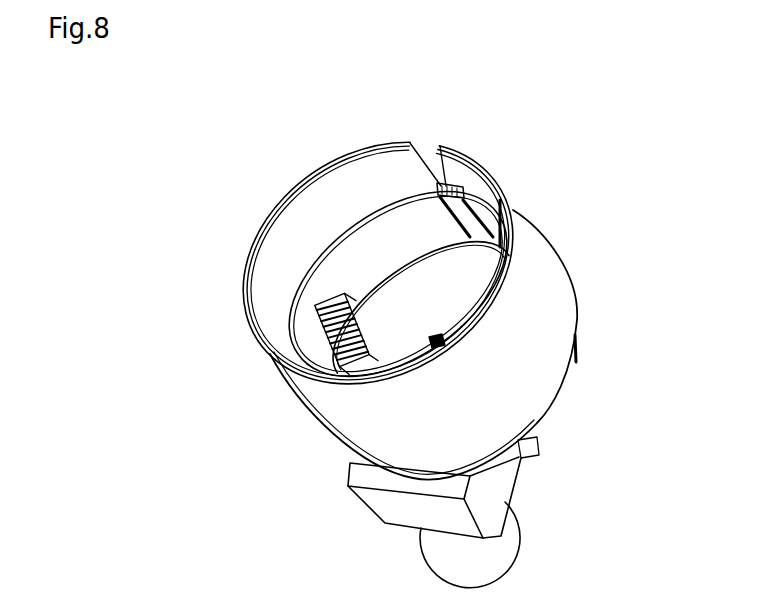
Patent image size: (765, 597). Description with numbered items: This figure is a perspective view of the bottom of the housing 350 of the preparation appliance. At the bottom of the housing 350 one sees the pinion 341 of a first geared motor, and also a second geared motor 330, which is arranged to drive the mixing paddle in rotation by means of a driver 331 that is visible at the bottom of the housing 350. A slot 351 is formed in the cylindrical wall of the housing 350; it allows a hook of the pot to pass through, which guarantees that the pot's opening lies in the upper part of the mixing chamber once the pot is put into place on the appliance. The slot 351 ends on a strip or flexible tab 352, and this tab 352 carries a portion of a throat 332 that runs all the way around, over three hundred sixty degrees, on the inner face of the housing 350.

The housing 350 is at (545, 208).
The slot 351 is at (430, 168).
The flexible tab 352 is at (465, 207).
The throat 332 is at (323, 255).
The driver 331 is at (430, 341).
The pinion 341 is at (330, 352).
The geared motor 330 is at (498, 542).